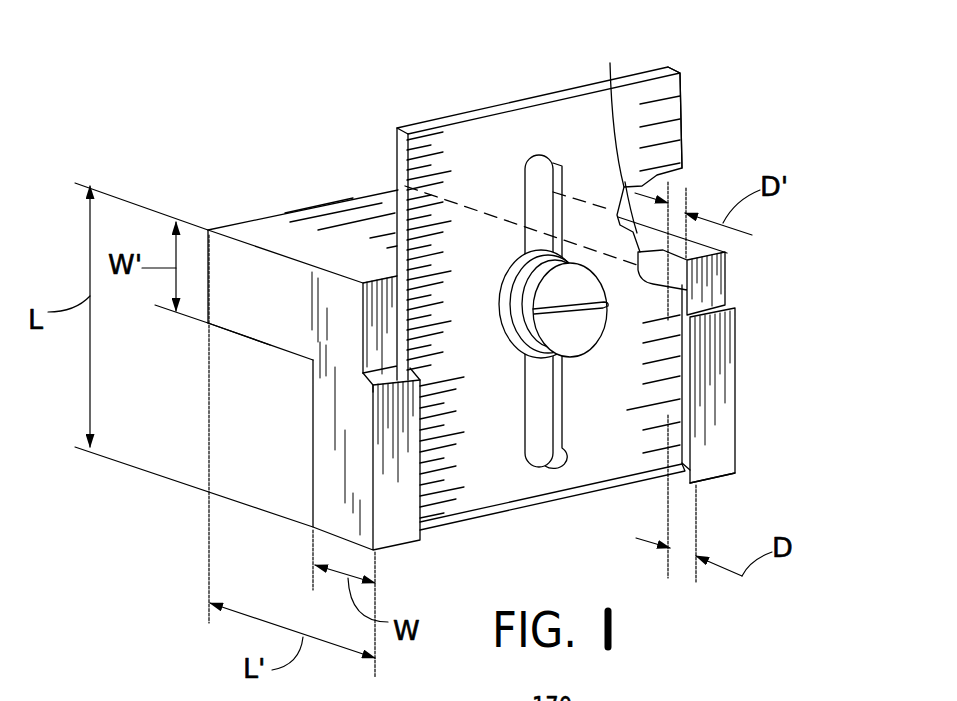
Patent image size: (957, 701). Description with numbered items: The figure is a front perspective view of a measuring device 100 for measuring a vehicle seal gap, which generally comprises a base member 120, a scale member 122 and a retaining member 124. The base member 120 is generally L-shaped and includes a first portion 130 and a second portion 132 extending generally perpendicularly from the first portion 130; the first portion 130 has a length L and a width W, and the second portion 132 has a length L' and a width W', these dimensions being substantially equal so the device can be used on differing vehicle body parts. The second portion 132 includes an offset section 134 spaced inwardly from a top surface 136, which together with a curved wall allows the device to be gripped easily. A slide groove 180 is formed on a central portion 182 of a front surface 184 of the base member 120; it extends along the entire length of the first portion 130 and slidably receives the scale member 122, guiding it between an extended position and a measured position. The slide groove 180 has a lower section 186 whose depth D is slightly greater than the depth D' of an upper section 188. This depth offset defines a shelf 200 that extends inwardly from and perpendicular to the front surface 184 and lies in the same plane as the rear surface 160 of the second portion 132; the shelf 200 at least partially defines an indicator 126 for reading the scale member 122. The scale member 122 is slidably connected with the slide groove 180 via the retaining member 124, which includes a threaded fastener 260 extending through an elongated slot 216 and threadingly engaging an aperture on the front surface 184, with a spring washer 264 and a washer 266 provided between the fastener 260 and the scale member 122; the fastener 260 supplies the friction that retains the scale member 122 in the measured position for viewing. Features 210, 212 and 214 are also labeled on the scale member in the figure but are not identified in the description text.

The measuring device 100 is at (517, 314).
The base member 120 is at (269, 339).
The scale member 122 is at (682, 83).
The retaining member 124 is at (590, 357).
The indicator 126 is at (365, 372).
The first portion 130 is at (328, 477).
The second portion 132 is at (242, 310).
The offset section 134 is at (611, 142).
The top surface 136 is at (304, 233).
The rear surface 160 is at (257, 342).
The slide groove 180 is at (434, 531).
The central portion 182 is at (535, 505).
The front surface 184 is at (740, 412).
The lower section 186 is at (688, 420).
The upper section 188 is at (727, 273).
The shelf 200 is at (751, 352).
The rule 210 is at (553, 314).
The graduations 212 is at (395, 160).
The graduations at rule end 214 is at (682, 108).
The elongated slot 216 is at (543, 172).
The threaded fastener 260 is at (540, 299).
The spring washer 264 is at (520, 310).
The washer 266 is at (517, 270).